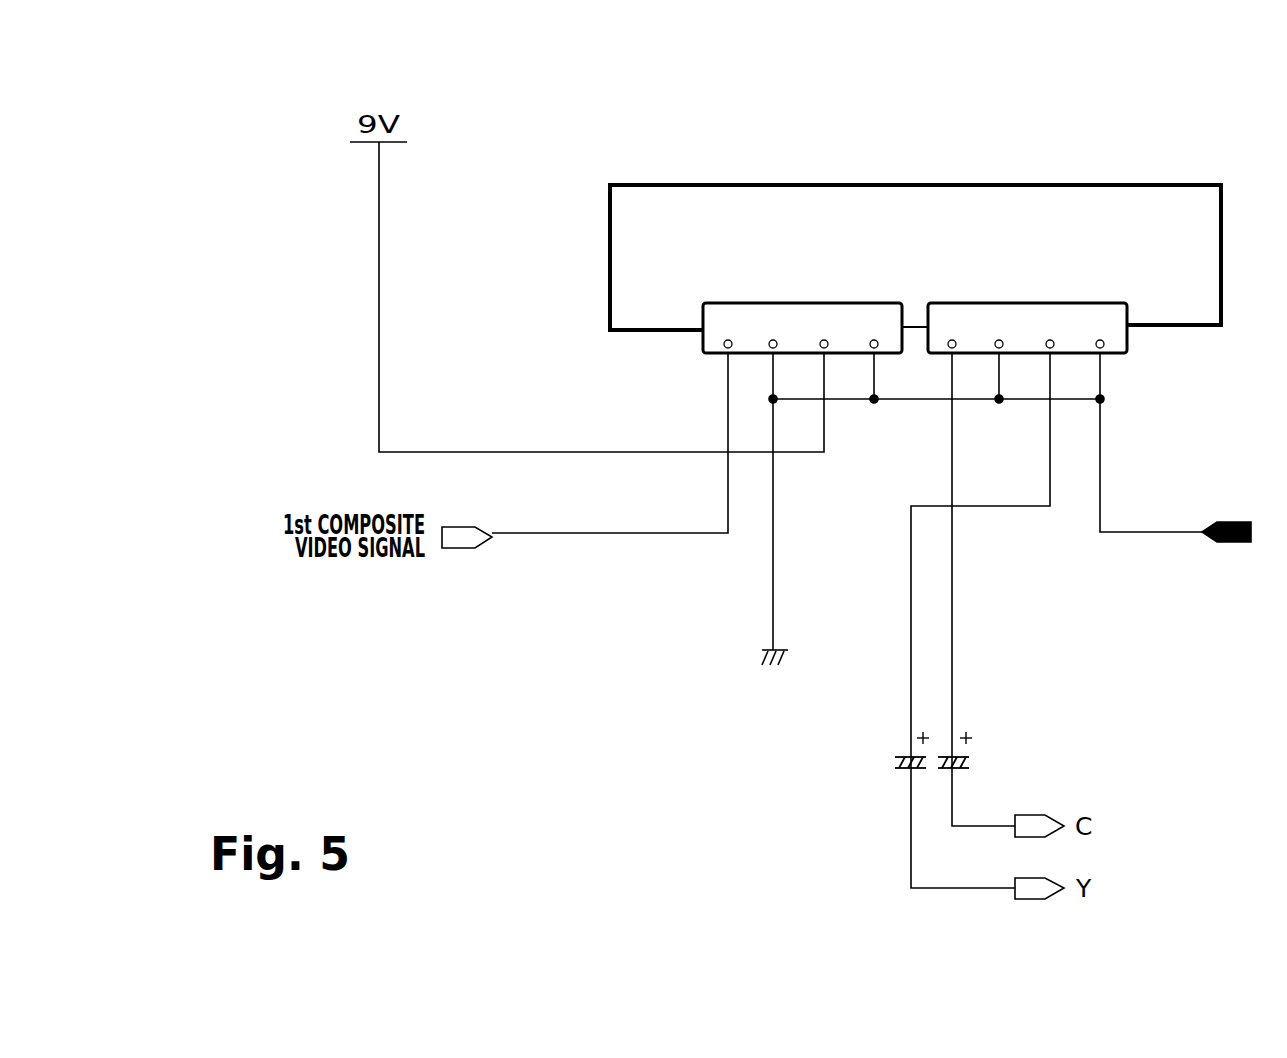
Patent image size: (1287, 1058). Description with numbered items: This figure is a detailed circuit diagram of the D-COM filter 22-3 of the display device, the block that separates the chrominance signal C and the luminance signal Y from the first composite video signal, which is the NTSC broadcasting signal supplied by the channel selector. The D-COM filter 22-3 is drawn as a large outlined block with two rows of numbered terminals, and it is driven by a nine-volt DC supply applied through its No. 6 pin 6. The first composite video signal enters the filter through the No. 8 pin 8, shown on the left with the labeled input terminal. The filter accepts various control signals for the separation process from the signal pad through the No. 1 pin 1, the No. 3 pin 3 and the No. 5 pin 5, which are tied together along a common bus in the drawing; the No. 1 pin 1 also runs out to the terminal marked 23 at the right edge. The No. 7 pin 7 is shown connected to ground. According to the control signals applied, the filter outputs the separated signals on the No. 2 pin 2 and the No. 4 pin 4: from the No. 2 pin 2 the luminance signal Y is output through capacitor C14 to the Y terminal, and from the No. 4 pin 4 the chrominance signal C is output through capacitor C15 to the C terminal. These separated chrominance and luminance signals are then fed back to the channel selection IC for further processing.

The D-COM filter 22-3 is at (1161, 139).
The connector terminal 23 is at (1226, 532).
The capacitor C14 is at (880, 753).
The capacitor C15 is at (984, 753).
The No. 1 pin 1 is at (1100, 310).
The No. 2 pin 2 is at (1050, 310).
The No. 3 pin 3 is at (999, 310).
The No. 4 pin 4 is at (952, 310).
The No. 5 pin 5 is at (874, 310).
The No. 6 pin 6 is at (824, 310).
The pin 7 is at (773, 310).
The No. 8 pin 8 is at (728, 310).